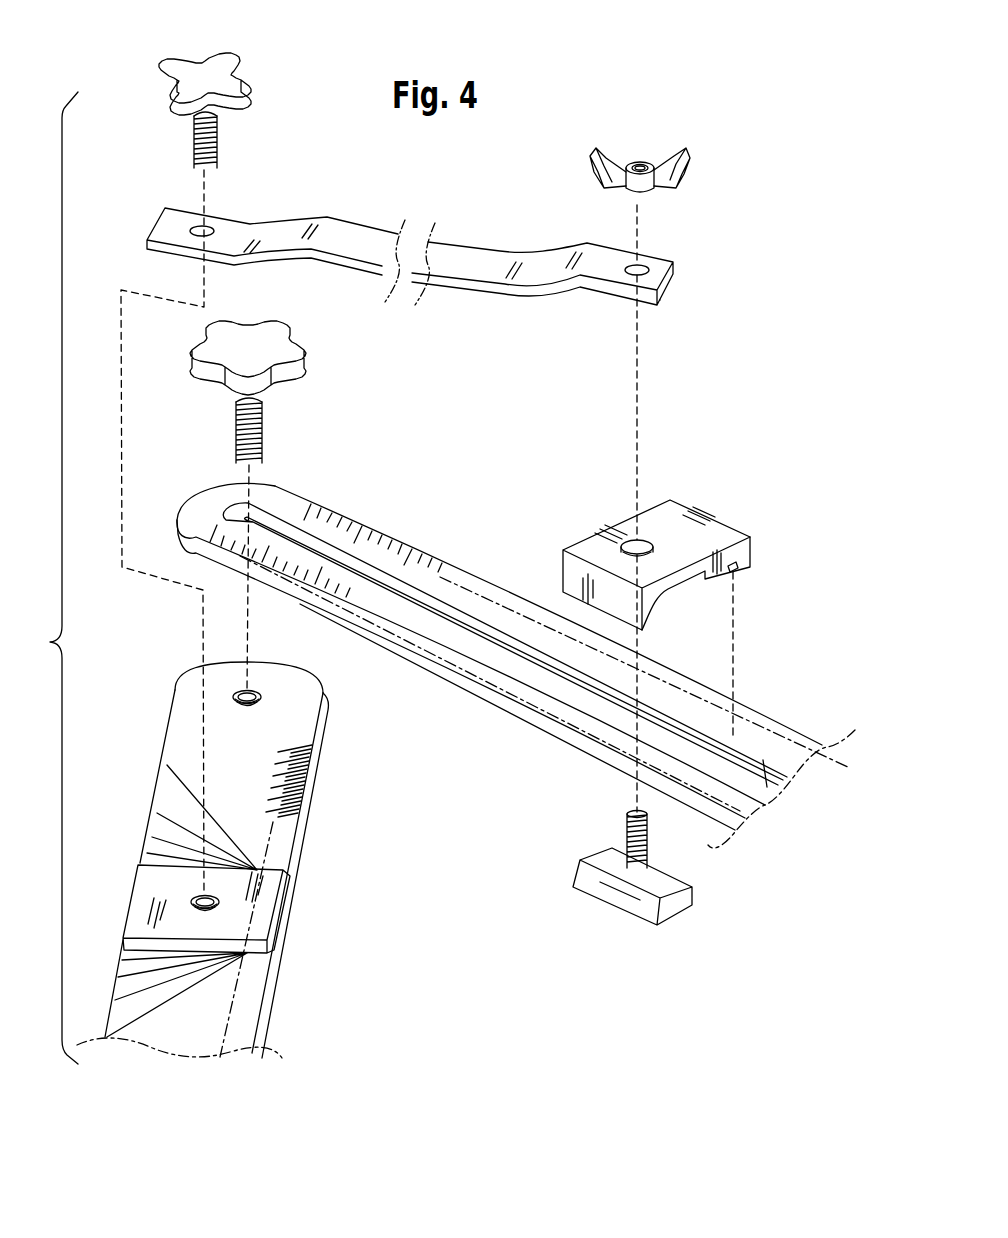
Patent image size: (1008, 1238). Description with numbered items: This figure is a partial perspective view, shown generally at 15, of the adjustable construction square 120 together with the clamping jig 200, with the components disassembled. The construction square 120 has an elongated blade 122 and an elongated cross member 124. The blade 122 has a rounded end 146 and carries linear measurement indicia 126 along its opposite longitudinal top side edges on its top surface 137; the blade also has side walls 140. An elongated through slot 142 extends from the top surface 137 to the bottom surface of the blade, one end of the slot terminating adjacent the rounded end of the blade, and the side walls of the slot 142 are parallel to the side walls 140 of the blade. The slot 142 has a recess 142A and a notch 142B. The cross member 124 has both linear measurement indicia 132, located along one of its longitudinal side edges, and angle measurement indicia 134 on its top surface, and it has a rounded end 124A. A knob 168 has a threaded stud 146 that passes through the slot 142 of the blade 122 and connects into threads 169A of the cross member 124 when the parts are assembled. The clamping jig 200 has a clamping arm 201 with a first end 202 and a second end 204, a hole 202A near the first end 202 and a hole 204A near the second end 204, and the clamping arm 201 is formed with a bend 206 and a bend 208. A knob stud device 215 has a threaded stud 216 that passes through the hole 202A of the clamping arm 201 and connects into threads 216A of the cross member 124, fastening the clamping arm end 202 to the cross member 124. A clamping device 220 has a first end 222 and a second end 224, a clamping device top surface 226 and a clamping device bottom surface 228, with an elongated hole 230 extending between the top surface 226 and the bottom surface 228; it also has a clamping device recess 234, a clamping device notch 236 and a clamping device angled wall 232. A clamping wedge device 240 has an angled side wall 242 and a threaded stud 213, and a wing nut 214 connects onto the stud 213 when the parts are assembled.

The adjustable construction square assembly 15 is at (546, 118).
The adjustable construction square 120 is at (508, 722).
The elongated blade 122 is at (518, 664).
The elongated cross member 124 is at (226, 844).
The rounded end 124A is at (178, 684).
The linear measurement indicia 126 is at (385, 530).
The linear measurement indicia 132 is at (300, 760).
The angle measurement indicia 134 is at (162, 806).
The top surface 137 is at (455, 586).
The side walls 140 is at (553, 728).
The elongated through slot 142 is at (592, 745).
The recess 142A is at (777, 775).
The notch 142B is at (762, 790).
The threaded stud 146 is at (196, 500).
The knob 168 is at (282, 352).
The threads 169A is at (260, 696).
The clamping jig 200 is at (452, 300).
The clamping arm 201 is at (458, 248).
The first end 202 is at (162, 224).
The hole 202A is at (198, 240).
The second end 204 is at (662, 300).
The hole 204A is at (646, 267).
The bend 206 is at (546, 252).
The bend 208 is at (318, 228).
The threaded stud 213 is at (648, 815).
The wing nut 214 is at (676, 166).
The knob stud device 215 is at (200, 72).
The threaded stud 216 is at (212, 160).
The threads 216A is at (216, 906).
The clamping device 220 is at (659, 500).
The first end 222 is at (572, 582).
The second end 224 is at (736, 534).
The clamping device top surface 226 is at (680, 515).
The clamping device bottom surface 228 is at (754, 566).
The elongated hole 230 is at (626, 543).
The clamping device angled wall 232 is at (660, 612).
The clamping device recess 234 is at (718, 576).
The clamping device notch 236 is at (738, 572).
The clamping wedge device 240 is at (694, 900).
The angled side wall 242 is at (634, 910).